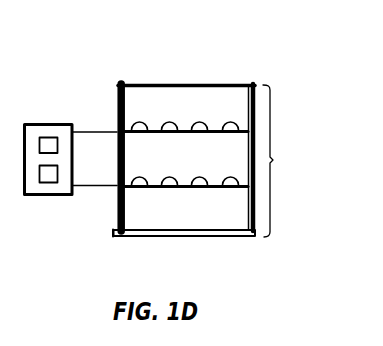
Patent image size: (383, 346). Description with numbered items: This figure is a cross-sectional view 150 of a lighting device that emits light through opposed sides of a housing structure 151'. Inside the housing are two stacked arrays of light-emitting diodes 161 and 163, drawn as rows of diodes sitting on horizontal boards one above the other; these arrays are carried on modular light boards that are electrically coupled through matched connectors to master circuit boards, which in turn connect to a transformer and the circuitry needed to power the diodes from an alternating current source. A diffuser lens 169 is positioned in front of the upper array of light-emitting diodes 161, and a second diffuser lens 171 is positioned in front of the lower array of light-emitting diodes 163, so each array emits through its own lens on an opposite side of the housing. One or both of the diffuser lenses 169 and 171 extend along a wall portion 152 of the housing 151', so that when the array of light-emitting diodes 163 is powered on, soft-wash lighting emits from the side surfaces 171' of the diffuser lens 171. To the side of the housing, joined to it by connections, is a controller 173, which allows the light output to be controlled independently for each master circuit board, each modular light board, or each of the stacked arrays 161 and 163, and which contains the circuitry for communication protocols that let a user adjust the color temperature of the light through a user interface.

The cross-sectional view 150 is at (269, 60).
The diffuser lens 169 is at (187, 84).
The housing structure 151' is at (85, 157).
The wall portion 152 is at (254, 203).
The array of light-emitting diodes 161 is at (187, 129).
The array of light-emitting diodes 163 is at (184, 190).
The diffuser lens 171 is at (185, 258).
The side surfaces 171' is at (75, 251).
The controller 173 is at (48, 195).